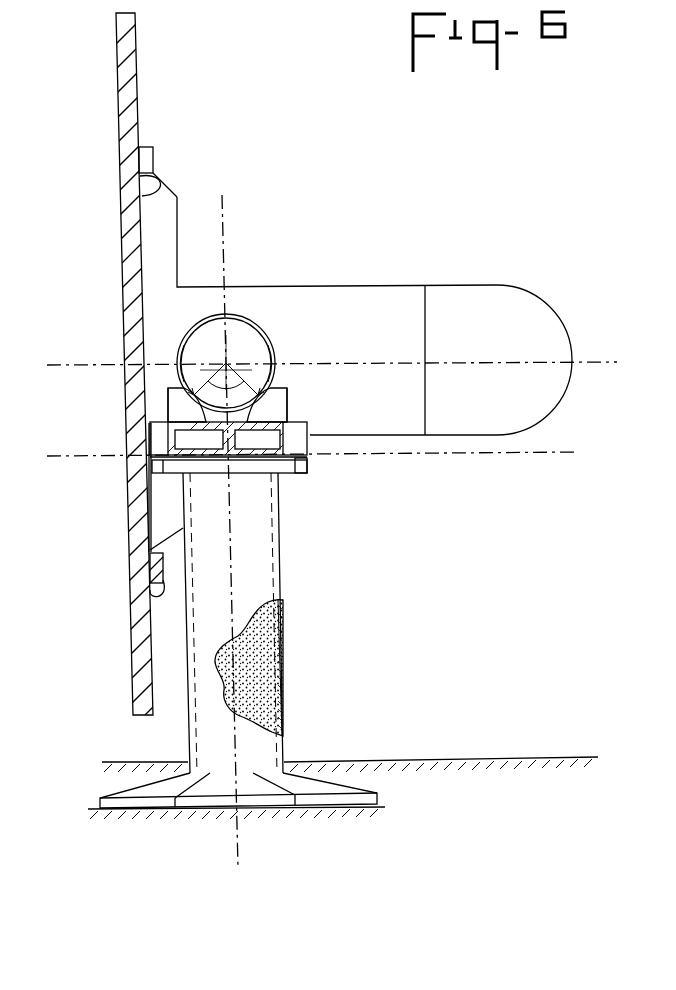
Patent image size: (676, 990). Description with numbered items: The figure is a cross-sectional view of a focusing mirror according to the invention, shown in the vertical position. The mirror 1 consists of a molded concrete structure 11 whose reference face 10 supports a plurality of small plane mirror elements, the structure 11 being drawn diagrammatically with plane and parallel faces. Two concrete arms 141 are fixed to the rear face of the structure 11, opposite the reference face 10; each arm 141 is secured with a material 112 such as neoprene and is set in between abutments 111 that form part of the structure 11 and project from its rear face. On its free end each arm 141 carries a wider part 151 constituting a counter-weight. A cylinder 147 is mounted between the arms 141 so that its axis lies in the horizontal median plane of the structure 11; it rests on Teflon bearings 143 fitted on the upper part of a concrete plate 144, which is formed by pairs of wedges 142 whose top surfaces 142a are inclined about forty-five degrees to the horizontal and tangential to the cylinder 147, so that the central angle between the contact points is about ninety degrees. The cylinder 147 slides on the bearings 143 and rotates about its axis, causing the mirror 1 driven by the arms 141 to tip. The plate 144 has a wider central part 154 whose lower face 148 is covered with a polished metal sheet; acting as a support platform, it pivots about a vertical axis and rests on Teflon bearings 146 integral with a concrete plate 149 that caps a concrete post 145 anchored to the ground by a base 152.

The mirror 1 is at (335, 486).
The reference face 10 is at (117, 52).
The molded concrete structure 11 is at (137, 68).
The abutments 111 is at (153, 150).
The material 112 is at (158, 183).
The arms 141 is at (400, 316).
The wedges 142 is at (173, 398).
The top surfaces 142a is at (182, 348).
The bearings 143 is at (170, 409).
The concrete plate 144 is at (149, 437).
The concrete post 145 is at (254, 573).
The Teflon bearings 146 is at (165, 478).
The cylinder 147 is at (240, 315).
The lower face 148 is at (296, 462).
The concrete plate 149 is at (307, 465).
The wider part 151 is at (544, 324).
The base 152 is at (163, 803).
The central part 154 is at (261, 462).